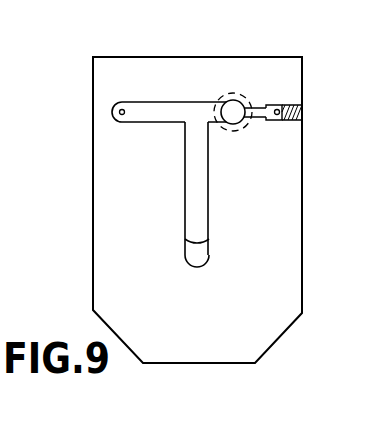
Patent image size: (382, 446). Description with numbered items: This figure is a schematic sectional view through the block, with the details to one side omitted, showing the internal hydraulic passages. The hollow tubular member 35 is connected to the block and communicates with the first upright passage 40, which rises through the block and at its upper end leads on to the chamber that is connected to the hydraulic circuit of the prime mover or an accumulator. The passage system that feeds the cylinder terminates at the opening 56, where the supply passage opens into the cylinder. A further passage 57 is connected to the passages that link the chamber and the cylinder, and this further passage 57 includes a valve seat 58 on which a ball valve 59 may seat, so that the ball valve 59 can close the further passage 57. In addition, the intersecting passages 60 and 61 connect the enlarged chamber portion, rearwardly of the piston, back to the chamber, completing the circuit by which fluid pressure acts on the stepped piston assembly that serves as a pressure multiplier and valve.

The opening of passage into cylinder 56 is at (156, 210).
The intersecting passage 61 is at (142, 117).
The intersecting passage 60 is at (118, 111).
The first upright passage 40 is at (187, 172).
The hollow tubular member 35 is at (215, 258).
The valve seat 58 is at (266, 106).
The further passage 57 is at (278, 105).
The ball valve 59 is at (283, 123).